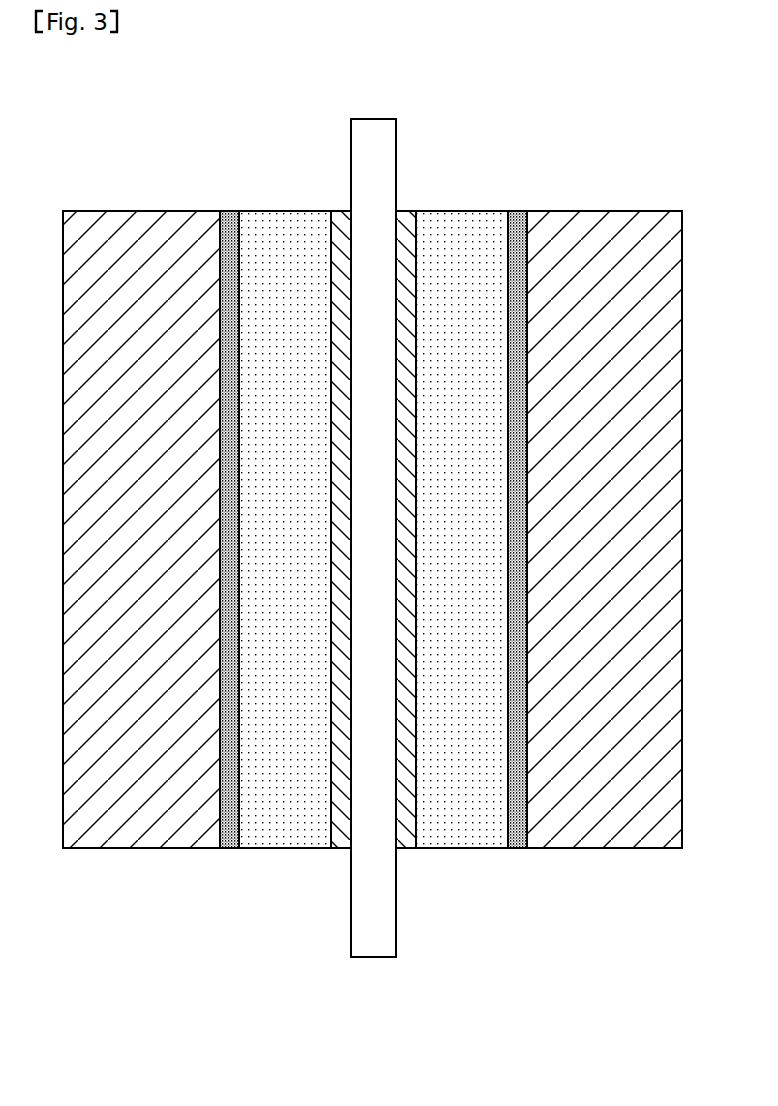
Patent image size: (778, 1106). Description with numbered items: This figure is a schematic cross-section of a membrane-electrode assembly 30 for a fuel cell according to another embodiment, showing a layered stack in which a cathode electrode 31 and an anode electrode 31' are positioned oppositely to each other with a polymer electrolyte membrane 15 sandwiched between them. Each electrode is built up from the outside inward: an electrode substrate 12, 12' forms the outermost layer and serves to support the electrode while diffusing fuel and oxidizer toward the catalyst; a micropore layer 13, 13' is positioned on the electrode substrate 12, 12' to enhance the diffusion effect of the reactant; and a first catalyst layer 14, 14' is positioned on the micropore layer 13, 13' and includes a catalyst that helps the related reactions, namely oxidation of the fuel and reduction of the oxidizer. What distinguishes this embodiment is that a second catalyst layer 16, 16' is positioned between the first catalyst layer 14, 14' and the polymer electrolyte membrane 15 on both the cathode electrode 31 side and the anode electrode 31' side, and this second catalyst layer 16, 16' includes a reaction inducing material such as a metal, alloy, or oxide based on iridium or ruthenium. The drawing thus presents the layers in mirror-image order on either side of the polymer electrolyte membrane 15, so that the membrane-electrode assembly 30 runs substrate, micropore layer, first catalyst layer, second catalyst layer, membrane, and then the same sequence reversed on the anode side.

The membrane-electrode assembly 30 is at (114, 120).
The cathode electrode 31 is at (207, 545).
The anode electrode 31' is at (539, 528).
The electrode substrate 12 is at (141, 559).
The electrode substrate 12' is at (604, 559).
The micropore layer 13 is at (233, 559).
The micropore layer 13' is at (521, 559).
The first catalyst layer 14 is at (285, 577).
The first catalyst layer 14' is at (462, 559).
The polymer electrolyte membrane 15 is at (378, 957).
The second catalyst layer 16 is at (331, 559).
The second catalyst layer 16' is at (415, 559).